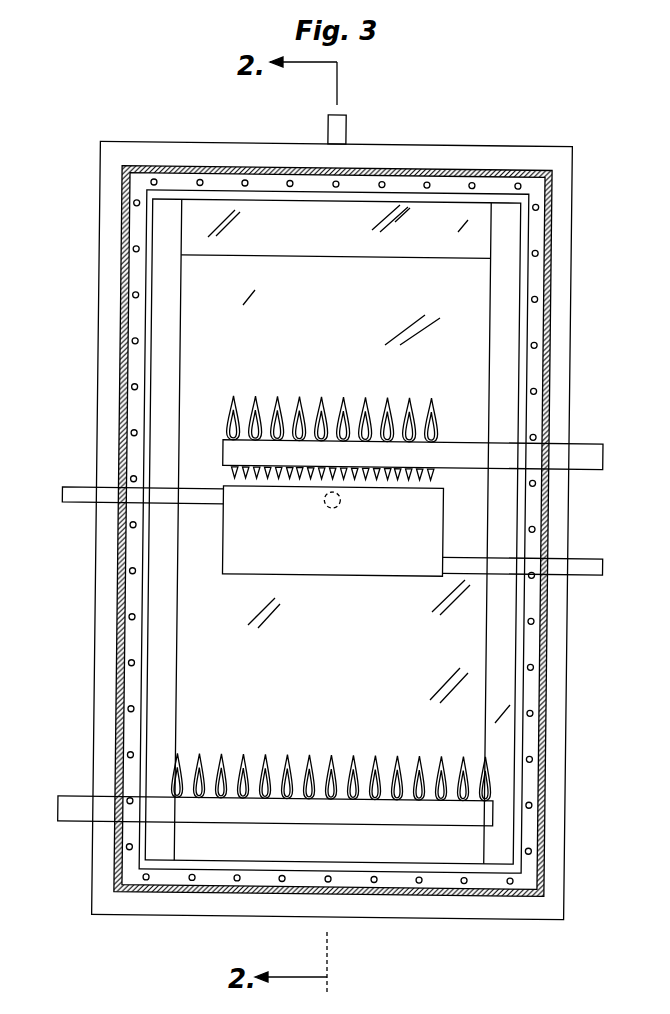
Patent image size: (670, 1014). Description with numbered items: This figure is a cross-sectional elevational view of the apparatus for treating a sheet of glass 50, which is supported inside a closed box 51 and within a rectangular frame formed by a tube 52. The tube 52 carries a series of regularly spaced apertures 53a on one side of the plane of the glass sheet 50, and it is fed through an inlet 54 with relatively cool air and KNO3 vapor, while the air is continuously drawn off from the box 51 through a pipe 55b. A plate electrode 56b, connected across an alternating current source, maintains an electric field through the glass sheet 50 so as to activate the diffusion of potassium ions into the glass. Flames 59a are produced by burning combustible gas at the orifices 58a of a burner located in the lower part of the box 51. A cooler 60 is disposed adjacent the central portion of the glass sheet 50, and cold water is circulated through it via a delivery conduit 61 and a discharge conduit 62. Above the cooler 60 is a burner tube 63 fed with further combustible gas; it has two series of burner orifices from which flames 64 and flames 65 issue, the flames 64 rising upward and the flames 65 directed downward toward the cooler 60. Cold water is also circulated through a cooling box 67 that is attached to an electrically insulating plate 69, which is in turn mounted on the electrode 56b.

The sheet of glass 50 is at (332, 532).
The closed box 51 is at (404, 173).
The tube 52 is at (290, 167).
The apertures 53a is at (131, 480).
The inlet 54 is at (344, 124).
The pipe 55b is at (368, 503).
The plate electrode 56b is at (345, 531).
The orifices 58a is at (178, 793).
The flames 59a is at (240, 768).
The cooler 60 is at (320, 567).
The delivery conduit 61 is at (92, 500).
The discharge conduit 62 is at (580, 568).
The burner tube 63 is at (573, 455).
The flames 64 is at (407, 407).
The flames 65 is at (322, 468).
The cooling box 67 is at (347, 242).
The electrically insulating plate 69 is at (347, 242).